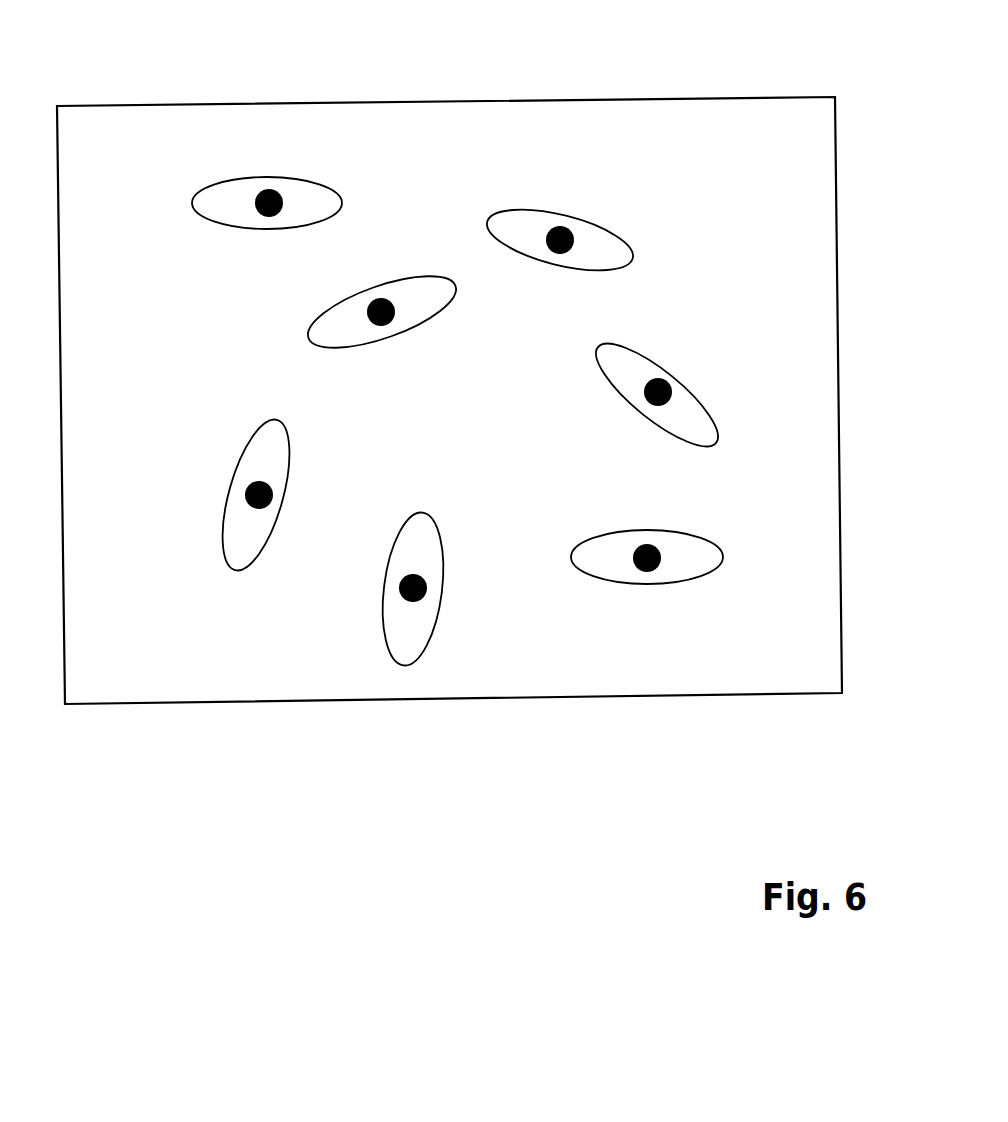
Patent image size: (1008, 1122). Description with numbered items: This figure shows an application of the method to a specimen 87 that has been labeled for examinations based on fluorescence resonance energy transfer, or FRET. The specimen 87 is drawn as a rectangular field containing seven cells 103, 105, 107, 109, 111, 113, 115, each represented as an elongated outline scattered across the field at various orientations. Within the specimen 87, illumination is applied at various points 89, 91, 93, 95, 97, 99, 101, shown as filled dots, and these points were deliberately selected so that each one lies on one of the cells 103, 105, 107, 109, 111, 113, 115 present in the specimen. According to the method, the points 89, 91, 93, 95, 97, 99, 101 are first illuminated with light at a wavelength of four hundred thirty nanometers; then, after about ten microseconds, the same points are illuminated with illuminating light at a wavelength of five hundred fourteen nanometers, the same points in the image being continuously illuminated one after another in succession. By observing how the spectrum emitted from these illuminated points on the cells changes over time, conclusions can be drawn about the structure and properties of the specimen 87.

The specimen 87 is at (427, 132).
The point 89 is at (272, 498).
The point 91 is at (423, 578).
The point 93 is at (637, 572).
The point 95 is at (652, 378).
The point 97 is at (563, 223).
The point 99 is at (367, 306).
The point 101 is at (277, 190).
The cell 103 is at (252, 466).
The cell 105 is at (420, 532).
The cell 107 is at (598, 545).
The cell 109 is at (707, 433).
The cell 111 is at (525, 228).
The cell 113 is at (235, 217).
The cell 115 is at (348, 328).